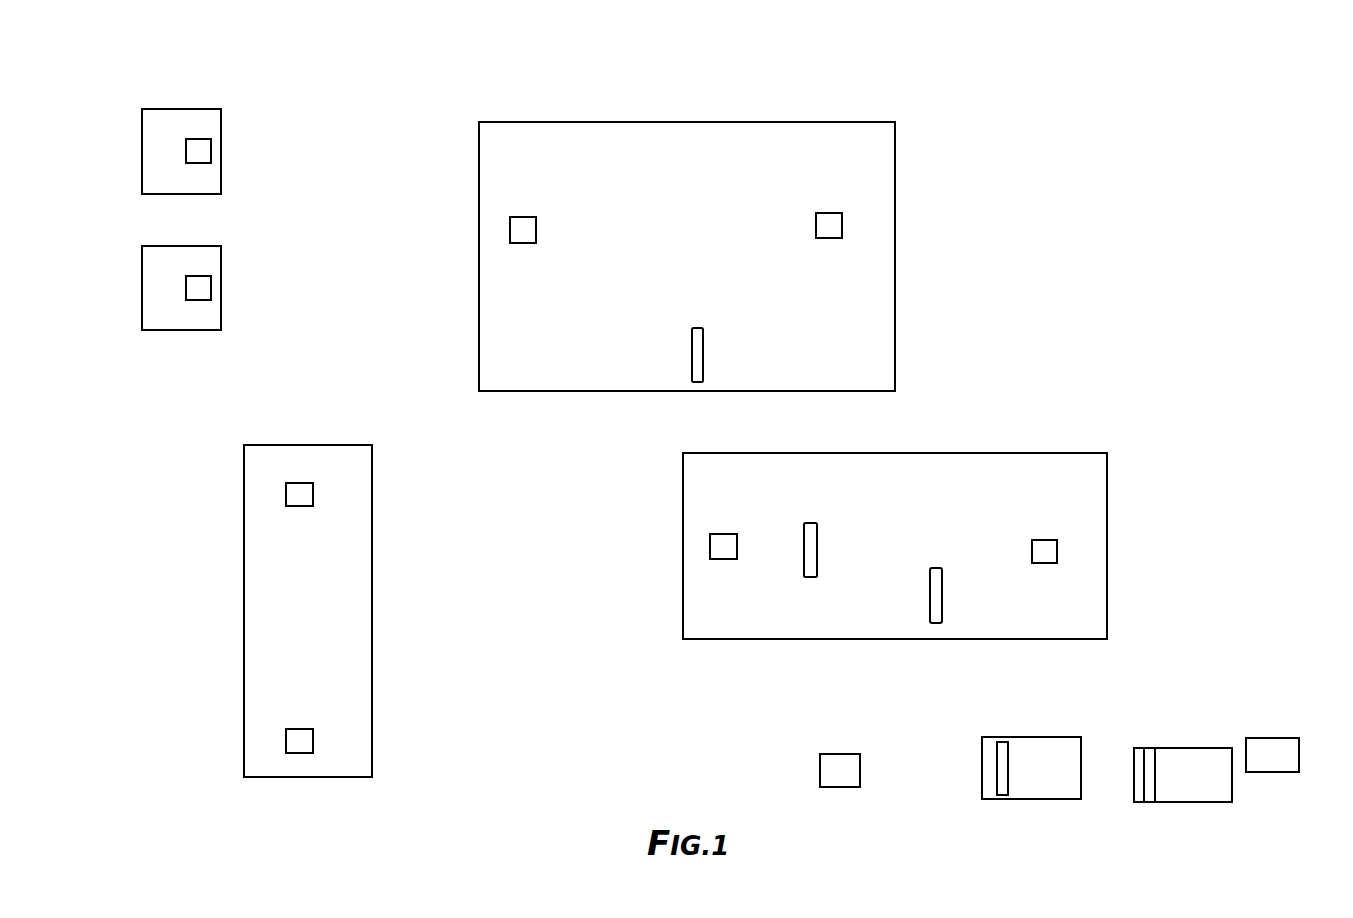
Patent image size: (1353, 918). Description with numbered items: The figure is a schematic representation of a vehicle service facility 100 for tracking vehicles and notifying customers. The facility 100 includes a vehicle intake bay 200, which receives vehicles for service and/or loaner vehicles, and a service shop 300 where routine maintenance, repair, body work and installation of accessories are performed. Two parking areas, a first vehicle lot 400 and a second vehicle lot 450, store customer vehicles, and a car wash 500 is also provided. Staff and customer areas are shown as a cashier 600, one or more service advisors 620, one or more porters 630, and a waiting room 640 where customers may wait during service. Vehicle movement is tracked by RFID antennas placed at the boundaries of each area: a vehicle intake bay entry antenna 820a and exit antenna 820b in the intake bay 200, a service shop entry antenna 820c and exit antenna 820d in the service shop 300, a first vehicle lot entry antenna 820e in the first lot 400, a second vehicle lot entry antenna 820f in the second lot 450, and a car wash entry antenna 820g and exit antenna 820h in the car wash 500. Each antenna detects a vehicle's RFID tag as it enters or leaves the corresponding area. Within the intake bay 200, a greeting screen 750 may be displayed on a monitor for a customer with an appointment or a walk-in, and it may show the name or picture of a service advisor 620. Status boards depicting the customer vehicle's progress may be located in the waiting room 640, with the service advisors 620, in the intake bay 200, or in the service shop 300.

The vehicle service facility 100 is at (1099, 158).
The vehicle intake bay 200 is at (1033, 453).
The service shop 300 is at (479, 160).
The first vehicle lot 400 is at (221, 120).
The second vehicle lot 450 is at (221, 257).
The car wash 500 is at (244, 636).
The cashier 600 is at (838, 754).
The service advisor 620 is at (1040, 737).
The porter 630 is at (1280, 738).
The waiting room 640 is at (1192, 748).
The greeting screen 750 is at (810, 522).
The vehicle intake bay entry antenna 820a is at (1057, 549).
The vehicle intake bay exit antenna 820b is at (710, 546).
The service shop entry antenna 820c is at (510, 226).
The service shop exit antenna 820d is at (842, 224).
The first vehicle lot entry antenna 820e is at (212, 149).
The second vehicle lot entry antenna 820f is at (211, 289).
The car wash entry antenna 820g is at (313, 490).
The car wash exit antenna 820h is at (313, 741).